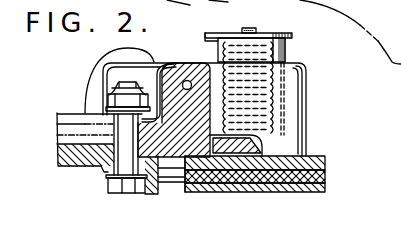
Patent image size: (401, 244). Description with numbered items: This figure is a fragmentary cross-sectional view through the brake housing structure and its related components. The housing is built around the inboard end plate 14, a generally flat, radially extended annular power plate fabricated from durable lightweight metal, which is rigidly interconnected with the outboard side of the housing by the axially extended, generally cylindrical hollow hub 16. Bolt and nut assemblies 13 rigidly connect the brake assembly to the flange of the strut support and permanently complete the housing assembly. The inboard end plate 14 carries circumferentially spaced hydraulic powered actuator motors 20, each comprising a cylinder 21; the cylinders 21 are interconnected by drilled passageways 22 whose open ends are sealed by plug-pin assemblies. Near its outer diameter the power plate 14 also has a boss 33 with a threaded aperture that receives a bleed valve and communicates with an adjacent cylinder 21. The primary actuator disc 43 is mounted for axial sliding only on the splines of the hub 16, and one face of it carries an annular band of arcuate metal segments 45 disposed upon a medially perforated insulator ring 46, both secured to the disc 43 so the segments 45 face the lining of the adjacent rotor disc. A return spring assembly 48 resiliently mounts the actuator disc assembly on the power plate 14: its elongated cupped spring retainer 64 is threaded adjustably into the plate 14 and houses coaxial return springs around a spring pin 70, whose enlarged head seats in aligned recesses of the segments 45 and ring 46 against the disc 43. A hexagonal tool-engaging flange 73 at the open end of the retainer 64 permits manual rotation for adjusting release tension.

The bolt and nut assemblies 13 is at (118, 80).
The inboard end plate 14 is at (100, 140).
The hub 16 is at (98, 168).
The hydraulic powered actuator motors 20 is at (155, 63).
The cylinders 21 is at (105, 88).
The passageways 22 is at (187, 80).
The boss 33 is at (103, 59).
The primary actuator disc 43 is at (326, 155).
The arcuate metal segments 45 is at (327, 183).
The insulator ring 46 is at (320, 175).
The return spring assembly 48 is at (267, 31).
The spring retainer 64 is at (287, 43).
The spring pin 70 is at (255, 29).
The tool-engaging flange 73 is at (210, 32).